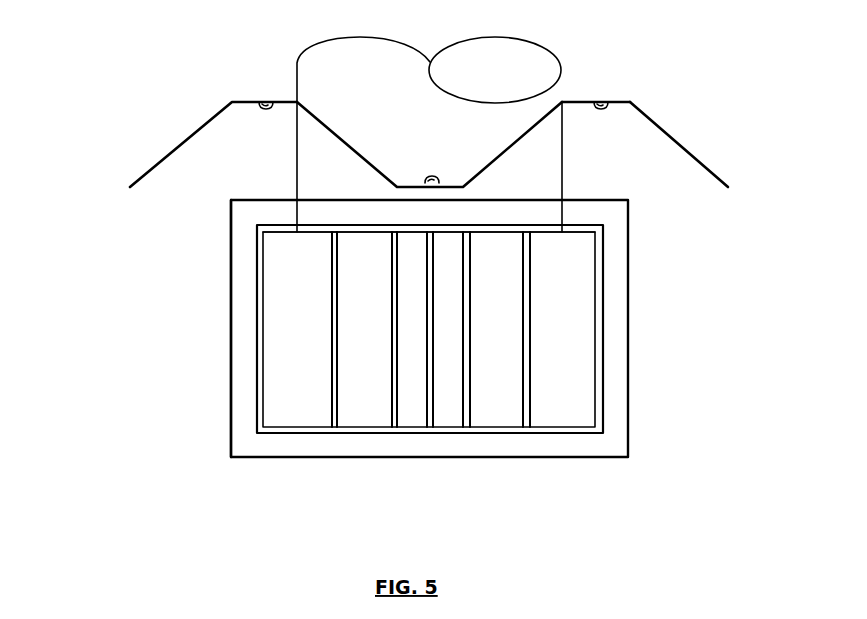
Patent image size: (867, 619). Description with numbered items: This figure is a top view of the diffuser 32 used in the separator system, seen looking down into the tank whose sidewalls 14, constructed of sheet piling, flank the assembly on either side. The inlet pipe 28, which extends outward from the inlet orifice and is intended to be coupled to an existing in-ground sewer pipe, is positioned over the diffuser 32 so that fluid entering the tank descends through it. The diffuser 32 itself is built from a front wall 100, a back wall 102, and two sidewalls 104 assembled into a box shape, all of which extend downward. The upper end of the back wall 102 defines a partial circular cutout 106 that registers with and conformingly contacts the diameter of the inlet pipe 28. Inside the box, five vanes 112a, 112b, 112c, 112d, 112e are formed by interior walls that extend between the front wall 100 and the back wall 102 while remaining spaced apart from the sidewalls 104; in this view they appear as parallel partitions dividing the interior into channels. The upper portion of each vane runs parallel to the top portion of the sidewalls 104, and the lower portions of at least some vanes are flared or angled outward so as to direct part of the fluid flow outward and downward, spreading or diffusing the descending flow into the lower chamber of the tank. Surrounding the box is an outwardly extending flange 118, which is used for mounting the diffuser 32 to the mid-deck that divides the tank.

The sidewalls 14 is at (200, 126).
The inlet pipe 28 is at (318, 73).
The diffuser 32 is at (160, 414).
The front wall 100 is at (588, 434).
The back wall 102 is at (568, 222).
The sidewalls 104 is at (257, 277).
The partial circular cutout 106 is at (315, 228).
The vane 112a is at (332, 381).
The vane 112b is at (387, 418).
The vane 112c is at (435, 413).
The vane 112d is at (472, 397).
The vane 112e is at (533, 283).
The outwardly extending flange 118 is at (243, 345).